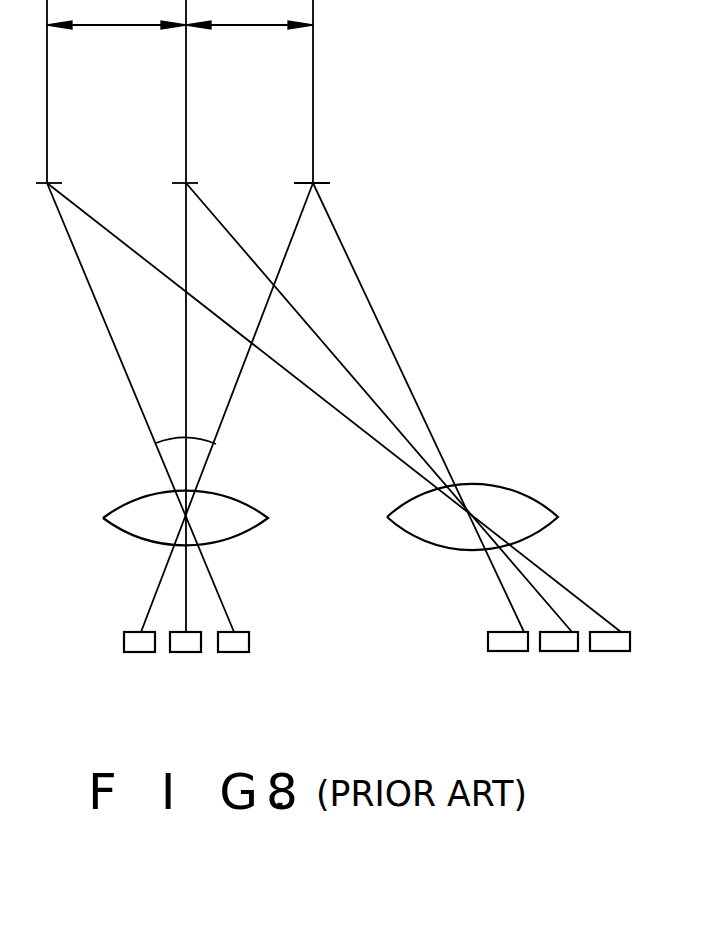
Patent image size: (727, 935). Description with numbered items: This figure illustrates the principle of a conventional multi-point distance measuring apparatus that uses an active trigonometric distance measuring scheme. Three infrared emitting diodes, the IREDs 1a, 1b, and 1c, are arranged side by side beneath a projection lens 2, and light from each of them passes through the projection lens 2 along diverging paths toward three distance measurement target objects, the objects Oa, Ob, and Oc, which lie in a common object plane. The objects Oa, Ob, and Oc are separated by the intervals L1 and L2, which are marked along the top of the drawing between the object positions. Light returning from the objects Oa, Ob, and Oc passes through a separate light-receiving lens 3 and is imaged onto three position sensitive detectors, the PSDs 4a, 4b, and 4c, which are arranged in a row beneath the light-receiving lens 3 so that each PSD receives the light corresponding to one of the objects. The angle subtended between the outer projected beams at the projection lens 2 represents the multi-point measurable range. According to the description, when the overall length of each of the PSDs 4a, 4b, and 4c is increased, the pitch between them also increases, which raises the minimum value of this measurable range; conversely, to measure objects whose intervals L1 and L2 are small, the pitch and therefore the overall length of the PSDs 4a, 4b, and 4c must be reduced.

The IRED 1a is at (141, 652).
The IRED 1b is at (185, 652).
The IRED 1c is at (234, 652).
The projection lens 2 is at (248, 522).
The light-receiving lens 3 is at (538, 521).
The PSD 4a is at (509, 651).
The PSD 4b is at (560, 651).
The PSD 4c is at (612, 651).
The object Oa is at (324, 183).
The object Ob is at (198, 183).
The object Oc is at (62, 183).
The interval between objects L1 is at (116, 14).
The interval between objects L2 is at (249, 14).